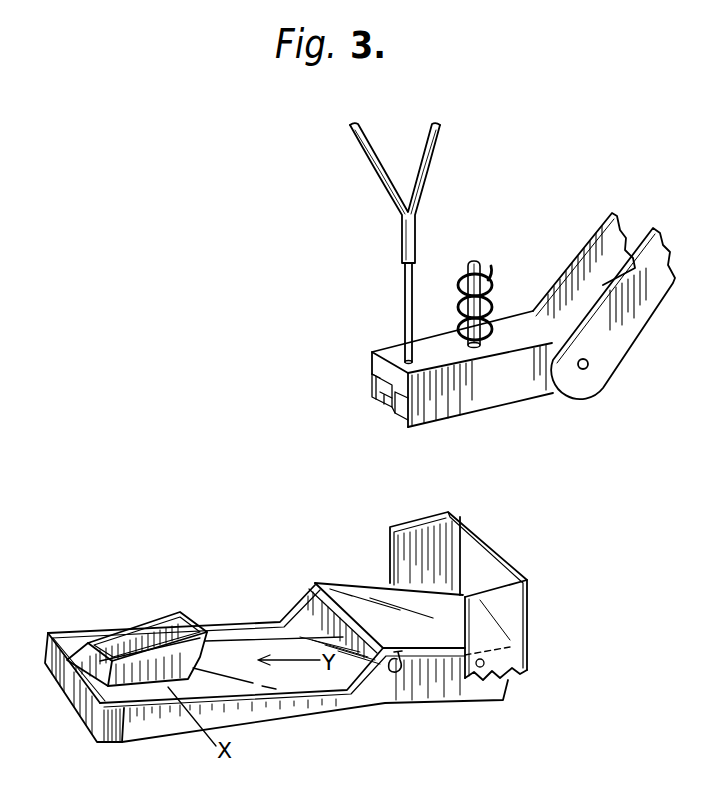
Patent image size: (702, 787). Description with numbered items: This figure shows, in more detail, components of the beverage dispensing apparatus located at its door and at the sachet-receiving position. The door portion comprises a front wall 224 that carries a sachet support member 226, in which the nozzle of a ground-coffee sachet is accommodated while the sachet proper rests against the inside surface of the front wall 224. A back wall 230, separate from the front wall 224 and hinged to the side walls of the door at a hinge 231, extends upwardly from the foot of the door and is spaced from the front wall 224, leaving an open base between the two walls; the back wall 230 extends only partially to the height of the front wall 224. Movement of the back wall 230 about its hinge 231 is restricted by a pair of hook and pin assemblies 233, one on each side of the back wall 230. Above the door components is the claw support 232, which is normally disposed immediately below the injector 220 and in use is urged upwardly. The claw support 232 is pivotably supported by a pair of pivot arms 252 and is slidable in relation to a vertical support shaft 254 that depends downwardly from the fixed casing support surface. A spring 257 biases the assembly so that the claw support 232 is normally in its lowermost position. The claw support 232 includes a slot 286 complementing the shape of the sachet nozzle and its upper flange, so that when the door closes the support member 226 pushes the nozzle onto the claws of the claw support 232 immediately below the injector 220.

The injector 220 is at (405, 303).
The front wall 224 is at (285, 678).
The sachet support member 226 is at (80, 690).
The back wall 230 is at (358, 593).
The hinge 231 is at (508, 652).
The claw support 232 is at (470, 400).
The hook and pin assemblies 233 is at (392, 674).
The pivot arms 252 is at (594, 253).
The vertical support shaft 254 is at (467, 268).
The spring 257 is at (492, 266).
The slot 286 is at (392, 400).